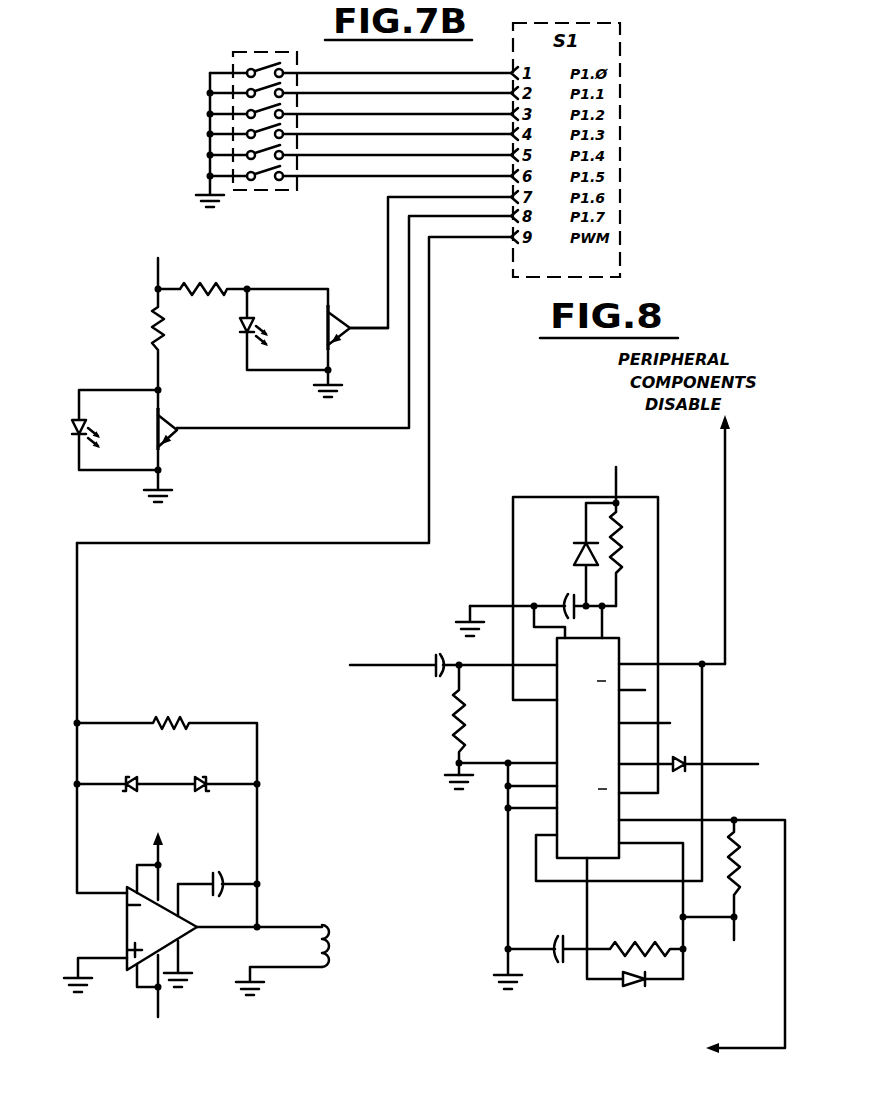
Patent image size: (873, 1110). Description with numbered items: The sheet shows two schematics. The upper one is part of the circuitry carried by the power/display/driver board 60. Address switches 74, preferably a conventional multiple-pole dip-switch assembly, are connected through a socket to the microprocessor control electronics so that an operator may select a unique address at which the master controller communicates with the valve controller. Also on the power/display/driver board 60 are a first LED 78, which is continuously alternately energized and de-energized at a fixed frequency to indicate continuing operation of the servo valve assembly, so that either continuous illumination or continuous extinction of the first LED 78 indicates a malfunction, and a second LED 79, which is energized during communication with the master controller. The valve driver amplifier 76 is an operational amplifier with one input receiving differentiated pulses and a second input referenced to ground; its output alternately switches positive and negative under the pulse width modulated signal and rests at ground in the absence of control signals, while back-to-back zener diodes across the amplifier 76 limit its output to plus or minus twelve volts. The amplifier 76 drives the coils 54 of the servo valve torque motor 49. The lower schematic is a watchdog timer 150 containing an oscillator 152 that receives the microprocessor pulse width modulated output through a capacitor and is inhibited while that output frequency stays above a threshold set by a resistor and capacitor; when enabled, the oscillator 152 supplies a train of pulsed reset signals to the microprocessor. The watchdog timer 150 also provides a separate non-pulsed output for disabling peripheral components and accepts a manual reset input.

In FIG. 7B, the address switches 74 is at (212, 55).
In FIG. 7B, the power/display/driver board 60 is at (152, 227).
In FIG. 7B, the first LED 78 is at (72, 428).
In FIG. 7B, the second LED 79 is at (240, 329).
In FIG. 8, the watchdog timer 150 is at (497, 520).
In FIG. 8, the oscillator 152 is at (557, 707).
In FIG. 8, the amplifier 76 is at (276, 844).
In FIG. 8, the coils 54 is at (322, 946).
In FIG. 8, the servo valve torque motor 49 is at (314, 959).